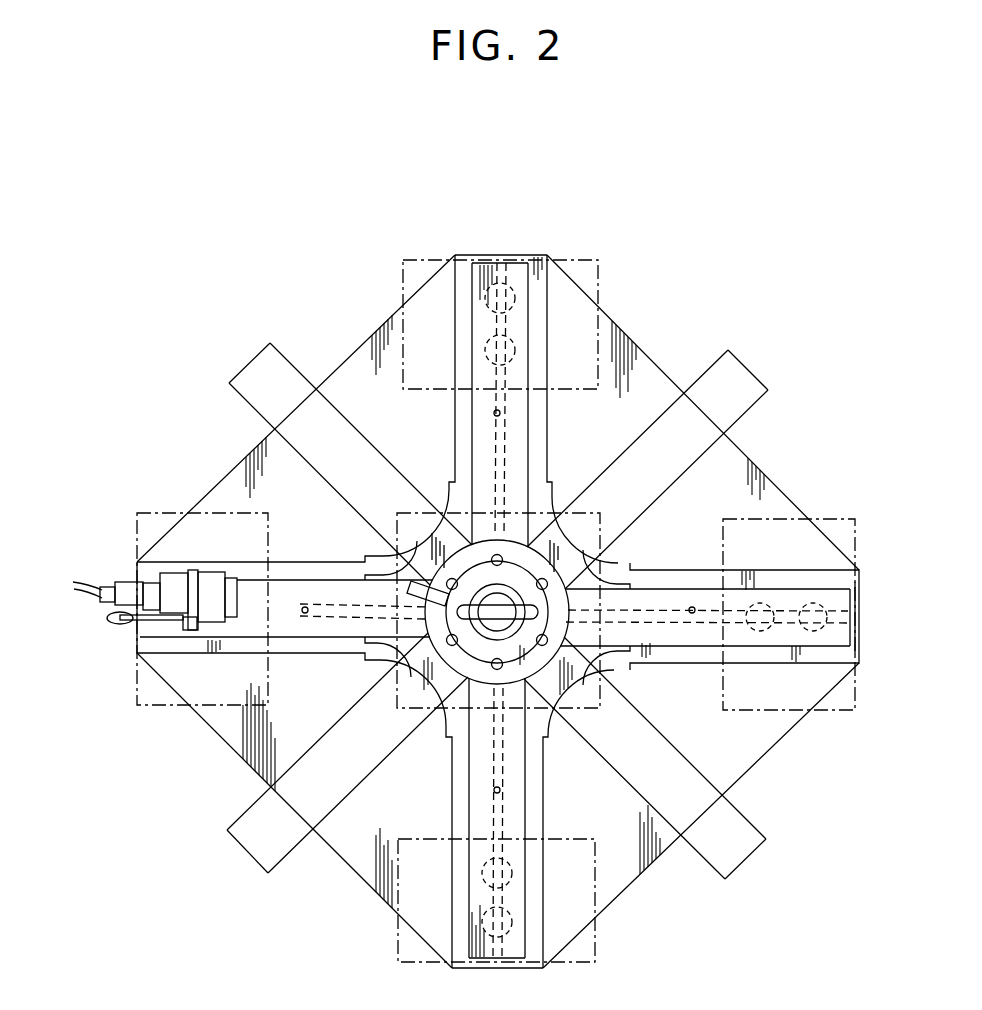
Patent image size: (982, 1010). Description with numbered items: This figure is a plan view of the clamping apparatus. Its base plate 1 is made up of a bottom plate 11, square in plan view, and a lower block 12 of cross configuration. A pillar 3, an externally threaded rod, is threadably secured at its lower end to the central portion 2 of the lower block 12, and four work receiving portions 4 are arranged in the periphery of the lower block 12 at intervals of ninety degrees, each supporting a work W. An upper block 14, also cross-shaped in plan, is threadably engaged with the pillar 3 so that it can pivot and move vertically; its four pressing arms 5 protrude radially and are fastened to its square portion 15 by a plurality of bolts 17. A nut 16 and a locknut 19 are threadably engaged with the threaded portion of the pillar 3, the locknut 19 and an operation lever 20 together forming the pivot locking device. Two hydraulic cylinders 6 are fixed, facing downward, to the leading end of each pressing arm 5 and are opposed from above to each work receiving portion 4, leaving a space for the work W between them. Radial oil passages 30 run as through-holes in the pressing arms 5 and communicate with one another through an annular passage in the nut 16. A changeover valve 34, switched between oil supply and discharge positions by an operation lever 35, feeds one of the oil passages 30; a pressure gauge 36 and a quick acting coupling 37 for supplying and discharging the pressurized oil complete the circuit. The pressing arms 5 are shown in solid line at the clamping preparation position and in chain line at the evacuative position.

The base plate 1 is at (498, 611).
The central portion 2 is at (548, 690).
The pillar 3 is at (523, 590).
The work receiving portion 4 is at (454, 333).
The pressing arm 5 is at (499, 257).
The hydraulic cylinder 6 is at (514, 347).
The bottom plate 11 is at (668, 876).
The lower block 12 is at (548, 907).
The upper block 14 is at (238, 372).
The square portion 15 is at (395, 662).
The nut 16 is at (552, 643).
The bolt 17 is at (560, 584).
The locknut 19 is at (436, 514).
The operation lever 20 is at (392, 552).
The radial oil passage 30 is at (494, 413).
The changeover valve 34 is at (190, 560).
The operation lever 35 is at (113, 625).
The pressure gauge 36 is at (213, 582).
The quick acting coupling 37 is at (138, 588).
The work W is at (600, 262).